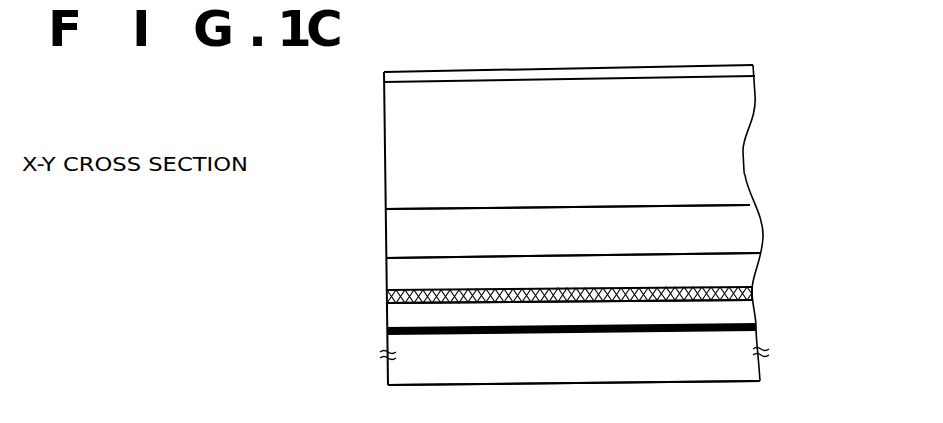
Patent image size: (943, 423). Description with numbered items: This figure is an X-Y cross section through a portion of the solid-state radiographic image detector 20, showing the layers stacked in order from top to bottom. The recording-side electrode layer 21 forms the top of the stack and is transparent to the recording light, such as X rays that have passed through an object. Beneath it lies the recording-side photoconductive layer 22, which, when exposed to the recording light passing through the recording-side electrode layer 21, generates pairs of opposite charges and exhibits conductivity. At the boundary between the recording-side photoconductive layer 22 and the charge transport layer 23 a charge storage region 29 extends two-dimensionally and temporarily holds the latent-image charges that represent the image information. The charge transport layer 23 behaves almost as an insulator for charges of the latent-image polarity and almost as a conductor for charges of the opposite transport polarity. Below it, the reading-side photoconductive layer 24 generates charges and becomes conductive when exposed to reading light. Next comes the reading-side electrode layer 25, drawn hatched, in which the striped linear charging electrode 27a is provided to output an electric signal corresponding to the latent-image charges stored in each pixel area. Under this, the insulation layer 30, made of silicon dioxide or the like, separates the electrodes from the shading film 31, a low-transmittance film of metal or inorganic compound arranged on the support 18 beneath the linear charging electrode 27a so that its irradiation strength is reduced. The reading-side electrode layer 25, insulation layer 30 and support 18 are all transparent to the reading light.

The solid-state radiographic image detector 20 is at (360, 122).
The recording-side electrode layer 21 is at (387, 74).
The recording-side photoconductive layer 22 is at (390, 149).
The charge storage region 29 is at (410, 197).
The charge transport layer 23 is at (392, 236).
The reading-side photoconductive layer 24 is at (392, 272).
The reading-side electrode layer 25 is at (388, 296).
The linear charging electrode 27a is at (751, 292).
The insulation layer 30 is at (392, 318).
The shading film 31 is at (388, 330).
The support 18 is at (399, 370).